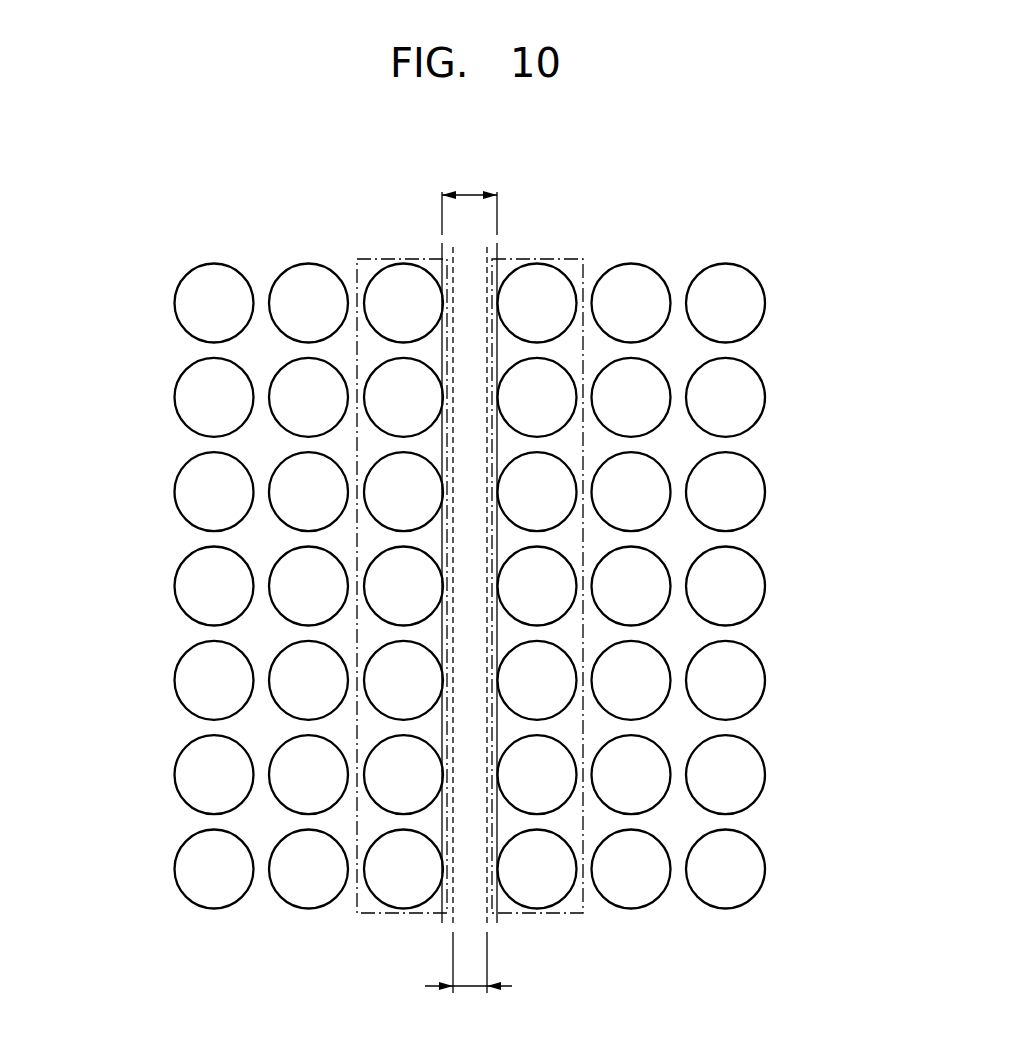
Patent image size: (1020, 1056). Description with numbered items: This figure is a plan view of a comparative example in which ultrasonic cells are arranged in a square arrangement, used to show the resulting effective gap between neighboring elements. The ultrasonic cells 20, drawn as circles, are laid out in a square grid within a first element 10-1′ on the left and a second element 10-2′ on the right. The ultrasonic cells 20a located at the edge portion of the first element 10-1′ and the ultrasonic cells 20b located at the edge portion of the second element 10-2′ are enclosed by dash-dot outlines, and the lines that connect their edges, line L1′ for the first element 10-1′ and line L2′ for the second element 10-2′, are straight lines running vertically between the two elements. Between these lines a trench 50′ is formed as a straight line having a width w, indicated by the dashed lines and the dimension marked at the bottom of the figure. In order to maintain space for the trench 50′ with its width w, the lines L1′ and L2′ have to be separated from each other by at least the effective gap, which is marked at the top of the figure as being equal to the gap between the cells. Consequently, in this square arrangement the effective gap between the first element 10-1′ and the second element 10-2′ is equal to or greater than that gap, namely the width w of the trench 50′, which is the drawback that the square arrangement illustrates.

The first element 10-1′ is at (134, 258).
The second element 10-2′ is at (810, 272).
The ultrasonic cells 20 is at (175, 398).
The ultrasonic cells at edge portion of first element 20a is at (370, 258).
The ultrasonic cells at edge portion of second element 20b is at (566, 258).
The line L1′ is at (442, 905).
The line L2′ is at (498, 905).
The trench 50′ is at (467, 907).
The width of trench w is at (468, 962).